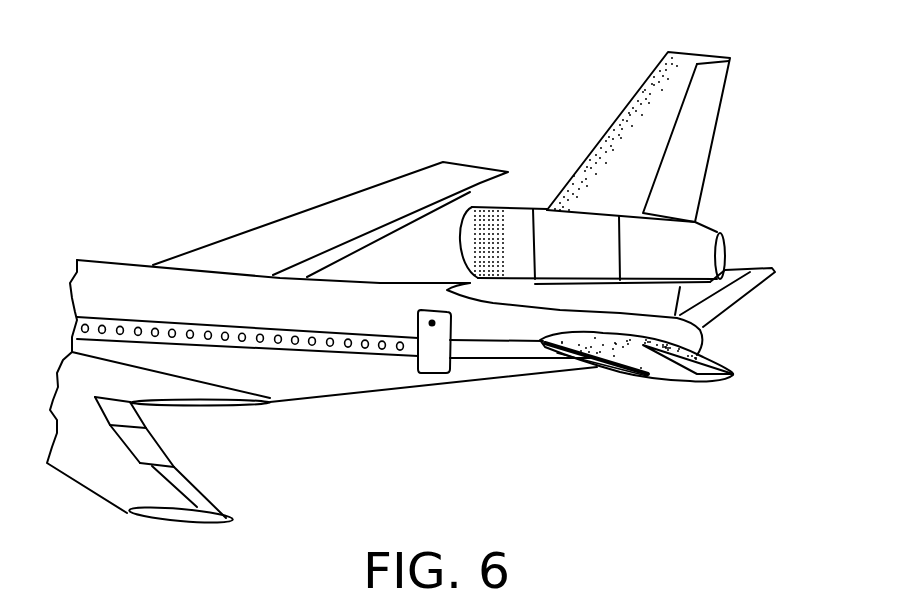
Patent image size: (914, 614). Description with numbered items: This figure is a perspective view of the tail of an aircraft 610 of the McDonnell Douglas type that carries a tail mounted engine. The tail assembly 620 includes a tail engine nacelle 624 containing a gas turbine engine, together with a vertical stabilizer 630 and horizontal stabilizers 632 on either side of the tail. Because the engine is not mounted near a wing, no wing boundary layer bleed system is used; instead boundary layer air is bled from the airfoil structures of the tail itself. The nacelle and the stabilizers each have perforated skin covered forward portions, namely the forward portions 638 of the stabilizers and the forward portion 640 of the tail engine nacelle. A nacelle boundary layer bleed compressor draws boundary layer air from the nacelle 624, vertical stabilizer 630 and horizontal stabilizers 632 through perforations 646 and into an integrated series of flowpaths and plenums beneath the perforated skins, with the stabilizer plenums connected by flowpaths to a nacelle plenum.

The aircraft 610 is at (375, 278).
The tail assembly 620 is at (510, 415).
The tail engine nacelle 624 is at (530, 207).
The vertical stabilizer 630 is at (687, 62).
The horizontal stabilizers 632 is at (697, 288).
The perforated skin covered forward portions of the stabilizers 638 is at (650, 83).
The perforated skin covered forward portion of the tail engine nacelle 640 is at (466, 247).
The perforations 646 is at (483, 210).